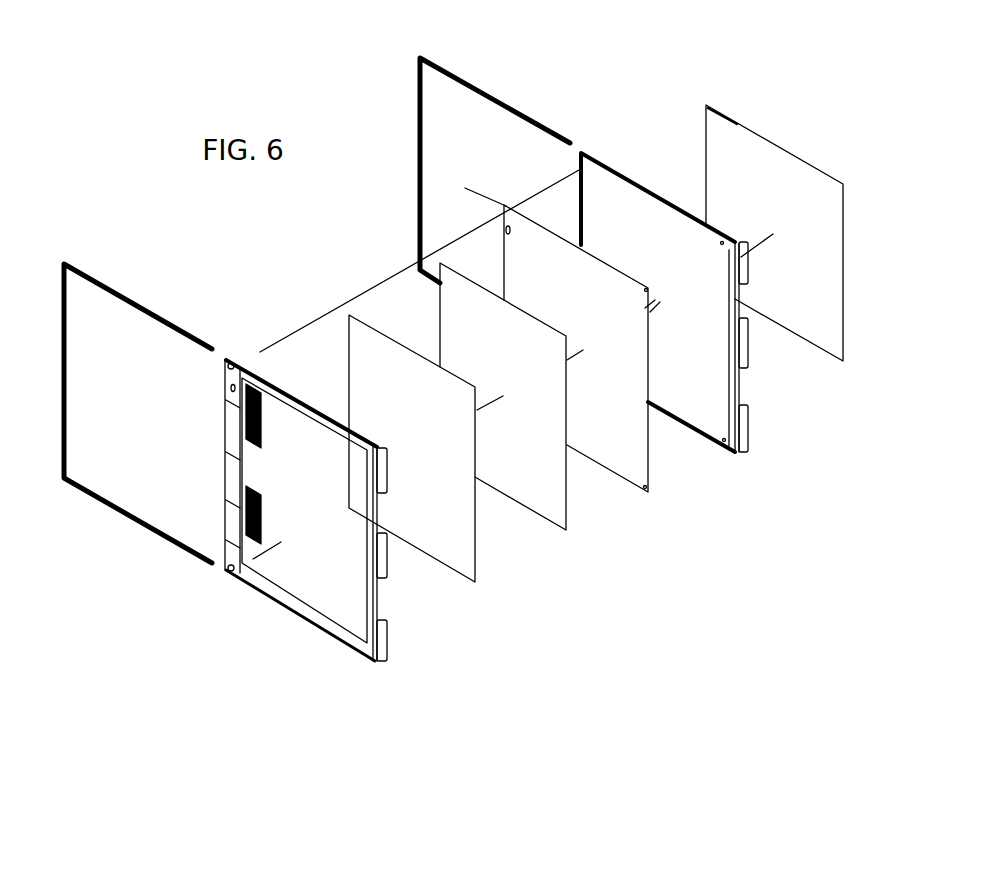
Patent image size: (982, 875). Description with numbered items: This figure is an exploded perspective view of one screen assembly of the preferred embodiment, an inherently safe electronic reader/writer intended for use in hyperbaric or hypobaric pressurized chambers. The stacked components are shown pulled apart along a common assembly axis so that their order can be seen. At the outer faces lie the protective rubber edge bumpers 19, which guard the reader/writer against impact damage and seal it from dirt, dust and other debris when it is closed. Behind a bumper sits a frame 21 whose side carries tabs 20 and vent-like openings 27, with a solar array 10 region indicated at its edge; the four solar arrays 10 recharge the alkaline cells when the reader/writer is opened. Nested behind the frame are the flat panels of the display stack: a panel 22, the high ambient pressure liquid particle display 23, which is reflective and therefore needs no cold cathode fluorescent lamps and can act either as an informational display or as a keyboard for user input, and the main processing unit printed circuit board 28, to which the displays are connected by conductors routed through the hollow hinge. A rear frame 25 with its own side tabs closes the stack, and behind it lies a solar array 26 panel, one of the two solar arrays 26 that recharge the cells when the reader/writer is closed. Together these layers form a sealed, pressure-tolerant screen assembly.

The solar arrays 10 is at (243, 407).
The protective rubber edge bumpers 19 is at (126, 521).
The mounting tab 20 is at (387, 661).
The front frame 21 is at (261, 352).
The first panel 22 is at (475, 582).
The liquid particle displays 23 is at (567, 530).
The rear frame 25 is at (737, 450).
The solar arrays 26 is at (706, 105).
The vent slots 27 is at (283, 542).
The main processing unit printed circuit board 28 is at (648, 492).